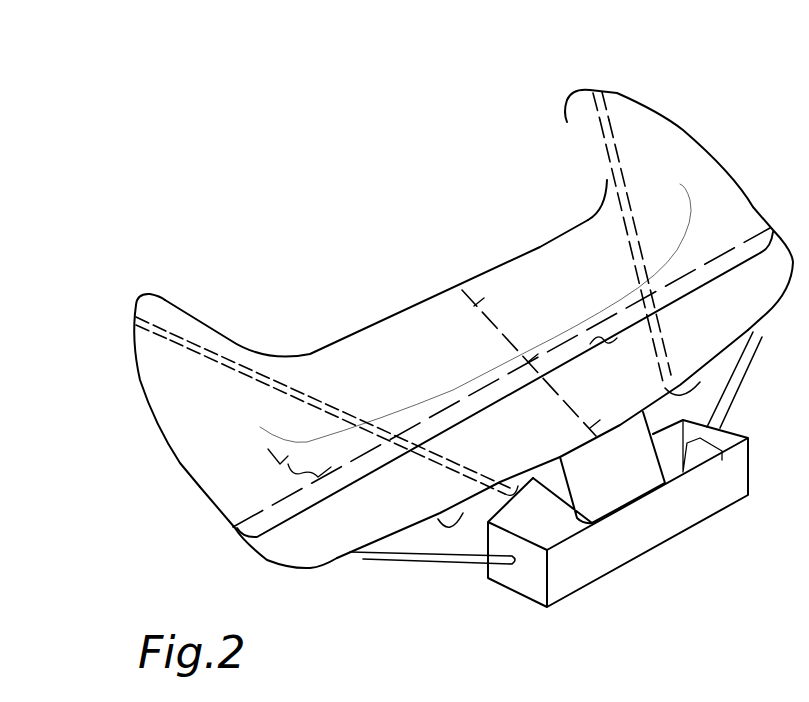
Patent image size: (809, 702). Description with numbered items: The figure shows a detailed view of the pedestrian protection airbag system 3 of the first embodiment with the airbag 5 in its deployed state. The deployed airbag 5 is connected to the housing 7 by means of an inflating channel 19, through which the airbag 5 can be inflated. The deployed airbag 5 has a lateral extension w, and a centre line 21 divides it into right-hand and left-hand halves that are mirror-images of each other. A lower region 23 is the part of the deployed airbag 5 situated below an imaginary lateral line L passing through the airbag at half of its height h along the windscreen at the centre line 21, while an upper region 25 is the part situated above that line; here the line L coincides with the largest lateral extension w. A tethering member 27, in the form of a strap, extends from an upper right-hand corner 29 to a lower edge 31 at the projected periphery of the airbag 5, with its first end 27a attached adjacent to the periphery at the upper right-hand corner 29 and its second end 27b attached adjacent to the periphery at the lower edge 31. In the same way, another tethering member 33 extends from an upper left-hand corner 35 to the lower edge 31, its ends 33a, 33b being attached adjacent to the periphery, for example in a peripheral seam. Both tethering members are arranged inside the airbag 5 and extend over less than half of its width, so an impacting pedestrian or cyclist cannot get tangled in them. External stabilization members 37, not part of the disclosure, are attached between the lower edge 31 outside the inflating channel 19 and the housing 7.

The pedestrian protection airbag system 3 is at (270, 211).
The airbag 5 is at (660, 167).
The housing 7 is at (673, 512).
The inflating channel 19 is at (627, 488).
The centre line 21 is at (496, 319).
The lower region 23 is at (313, 537).
The upper region 25 is at (177, 383).
The tethering member 27 is at (218, 357).
The first end 27a is at (133, 318).
The second end 27b is at (512, 487).
The upper right-hand corner 29 is at (147, 293).
The lower edge 31 is at (437, 518).
The tethering member 33 is at (612, 143).
The end 33a is at (600, 91).
The end 33b is at (700, 382).
The upper left-hand corner 35 is at (572, 96).
The external stabilization members 37 is at (733, 387).